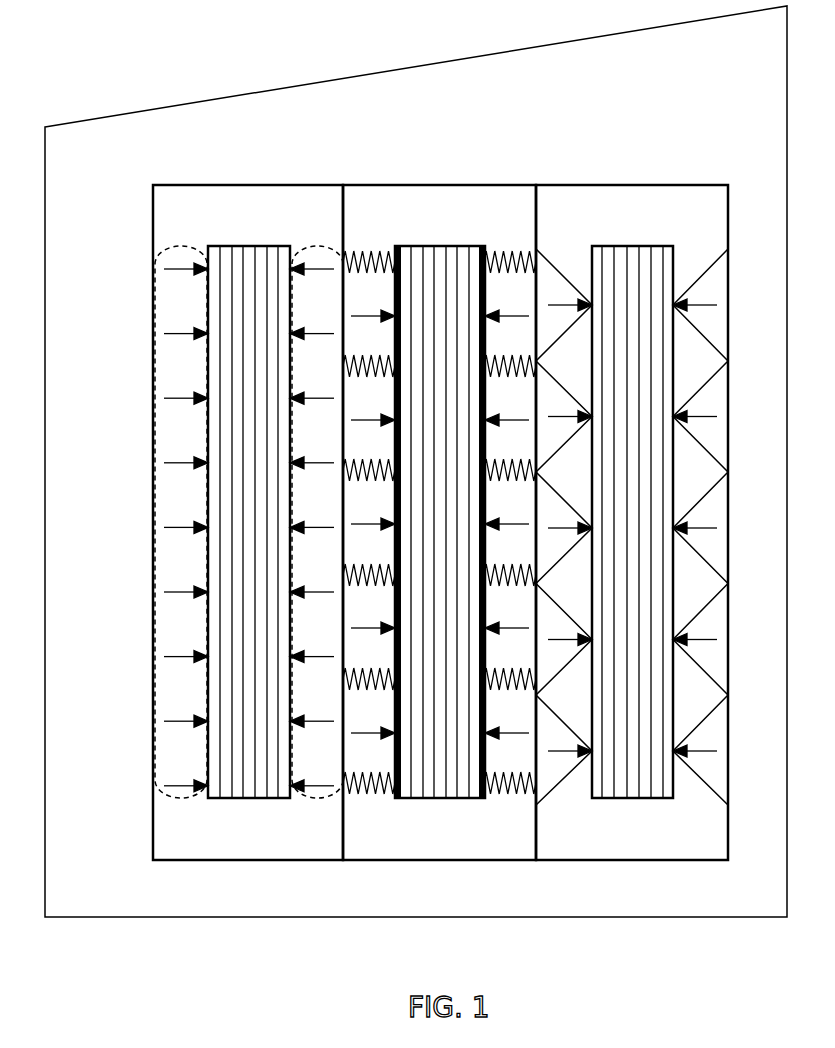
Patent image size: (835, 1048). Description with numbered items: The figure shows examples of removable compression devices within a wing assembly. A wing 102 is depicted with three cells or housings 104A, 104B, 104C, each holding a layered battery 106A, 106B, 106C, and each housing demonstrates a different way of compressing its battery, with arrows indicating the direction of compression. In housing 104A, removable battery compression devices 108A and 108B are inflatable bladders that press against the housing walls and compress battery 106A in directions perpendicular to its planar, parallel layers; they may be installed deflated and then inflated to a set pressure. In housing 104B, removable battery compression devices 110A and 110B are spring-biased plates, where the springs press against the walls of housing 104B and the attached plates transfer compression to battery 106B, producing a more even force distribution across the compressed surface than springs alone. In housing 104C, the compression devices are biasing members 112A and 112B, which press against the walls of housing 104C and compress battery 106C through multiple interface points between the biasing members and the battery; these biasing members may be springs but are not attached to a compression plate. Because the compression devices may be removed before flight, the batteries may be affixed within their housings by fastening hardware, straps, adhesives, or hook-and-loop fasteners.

The wing 102 is at (733, 74).
The housing 104A is at (275, 220).
The housing 104B is at (468, 220).
The housing 104C is at (661, 220).
The battery 106A is at (325, 842).
The battery 106B is at (513, 842).
The battery 106C is at (705, 842).
The removable battery compression device 108A is at (183, 247).
The removable battery compression device 108B is at (317, 247).
The removable battery compression device 110A is at (397, 250).
The removable battery compression device 110B is at (483, 250).
The biasing member 112A is at (558, 278).
The biasing member 112B is at (696, 275).